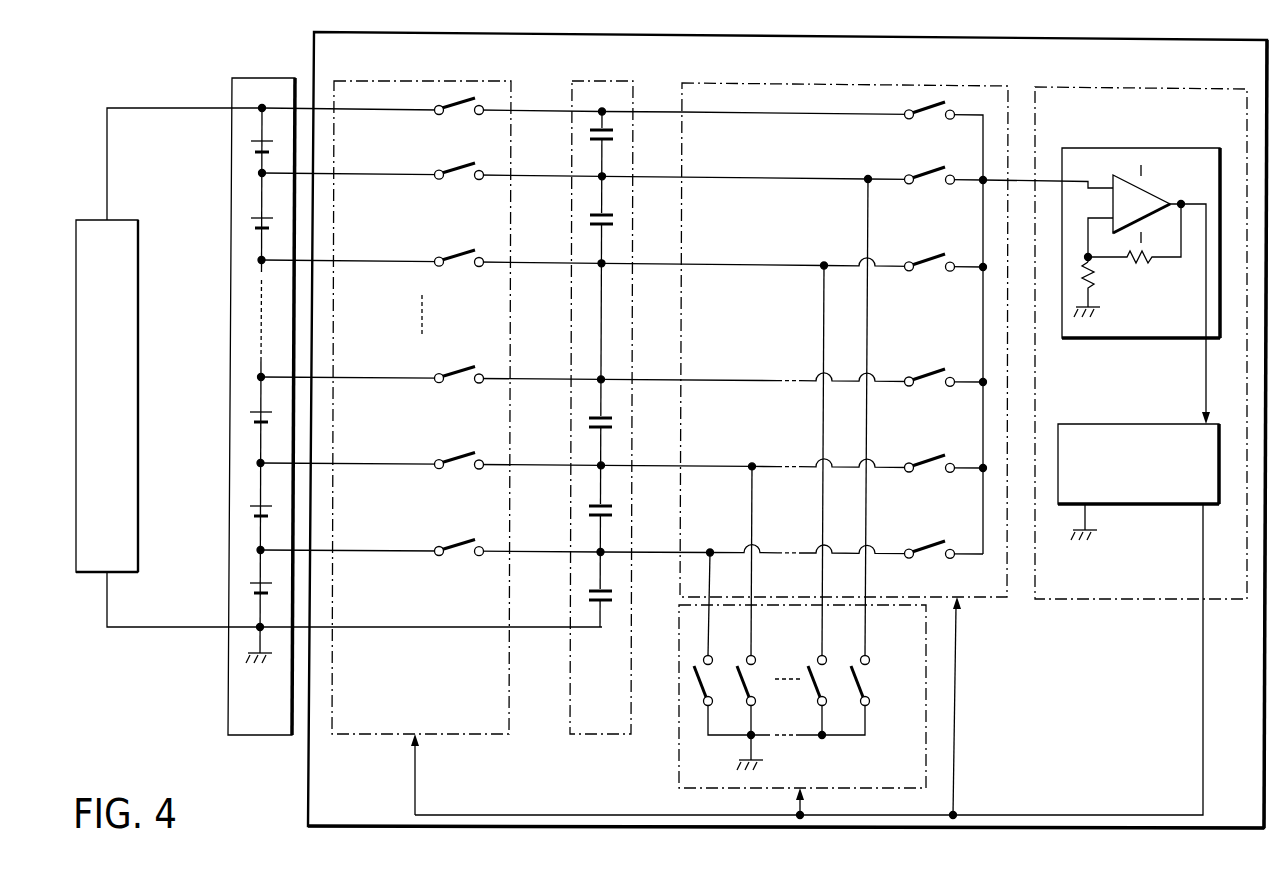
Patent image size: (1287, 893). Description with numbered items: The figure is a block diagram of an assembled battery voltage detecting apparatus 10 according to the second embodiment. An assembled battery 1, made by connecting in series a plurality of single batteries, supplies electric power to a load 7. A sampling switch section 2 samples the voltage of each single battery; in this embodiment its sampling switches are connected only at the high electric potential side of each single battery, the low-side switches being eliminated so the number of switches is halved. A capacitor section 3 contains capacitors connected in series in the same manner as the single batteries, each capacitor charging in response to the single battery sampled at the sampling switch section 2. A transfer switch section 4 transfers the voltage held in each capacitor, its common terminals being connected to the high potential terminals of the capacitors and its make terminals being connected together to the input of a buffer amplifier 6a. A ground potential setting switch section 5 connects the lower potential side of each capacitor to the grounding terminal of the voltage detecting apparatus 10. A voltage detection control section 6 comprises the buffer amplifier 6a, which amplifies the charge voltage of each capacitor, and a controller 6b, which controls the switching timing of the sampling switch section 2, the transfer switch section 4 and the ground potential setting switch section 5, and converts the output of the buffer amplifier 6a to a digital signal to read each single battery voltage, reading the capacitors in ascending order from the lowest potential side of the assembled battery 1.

The assembled battery 1 is at (262, 78).
The sampling switch section 2 is at (437, 81).
The capacitor section 3 is at (602, 81).
The transfer switch section 4 is at (835, 83).
The ground potential setting switch section 5 is at (679, 770).
The voltage detection control section 6 is at (1126, 87).
The buffer amplifier 6a is at (1135, 148).
The controller 6b is at (1135, 424).
The load 7 is at (138, 294).
The assembled battery voltage detecting apparatus 10 is at (873, 35).